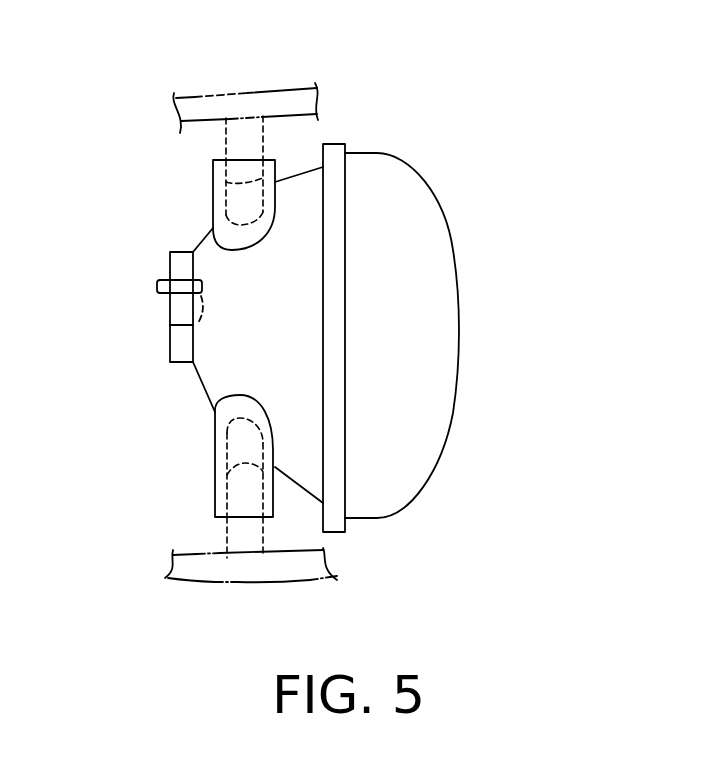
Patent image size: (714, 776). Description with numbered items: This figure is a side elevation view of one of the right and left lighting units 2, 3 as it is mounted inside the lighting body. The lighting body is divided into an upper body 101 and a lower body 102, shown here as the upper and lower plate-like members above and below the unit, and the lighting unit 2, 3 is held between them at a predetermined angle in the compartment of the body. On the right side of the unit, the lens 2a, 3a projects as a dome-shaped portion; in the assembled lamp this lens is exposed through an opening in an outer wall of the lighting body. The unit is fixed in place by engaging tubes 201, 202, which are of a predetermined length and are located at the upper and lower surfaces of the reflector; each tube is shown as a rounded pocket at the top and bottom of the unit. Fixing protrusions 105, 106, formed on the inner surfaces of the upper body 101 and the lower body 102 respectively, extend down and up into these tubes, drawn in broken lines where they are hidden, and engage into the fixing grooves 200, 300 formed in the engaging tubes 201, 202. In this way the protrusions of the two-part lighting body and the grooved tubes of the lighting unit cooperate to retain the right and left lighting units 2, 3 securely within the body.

The right lighting unit 2 is at (211, 338).
The left lighting unit 3 is at (213, 373).
The lens 2a is at (483, 335).
The lens 3a is at (420, 253).
The upper body 101 is at (195, 112).
The lower body 102 is at (188, 572).
The fixing protrusion 105 is at (265, 145).
The fixing protrusion 106 is at (265, 528).
The engaging tube 201 is at (215, 183).
The engaging tube 202 is at (217, 502).
The fixing groove 200 is at (146, 211).
The fixing groove 300 is at (220, 210).